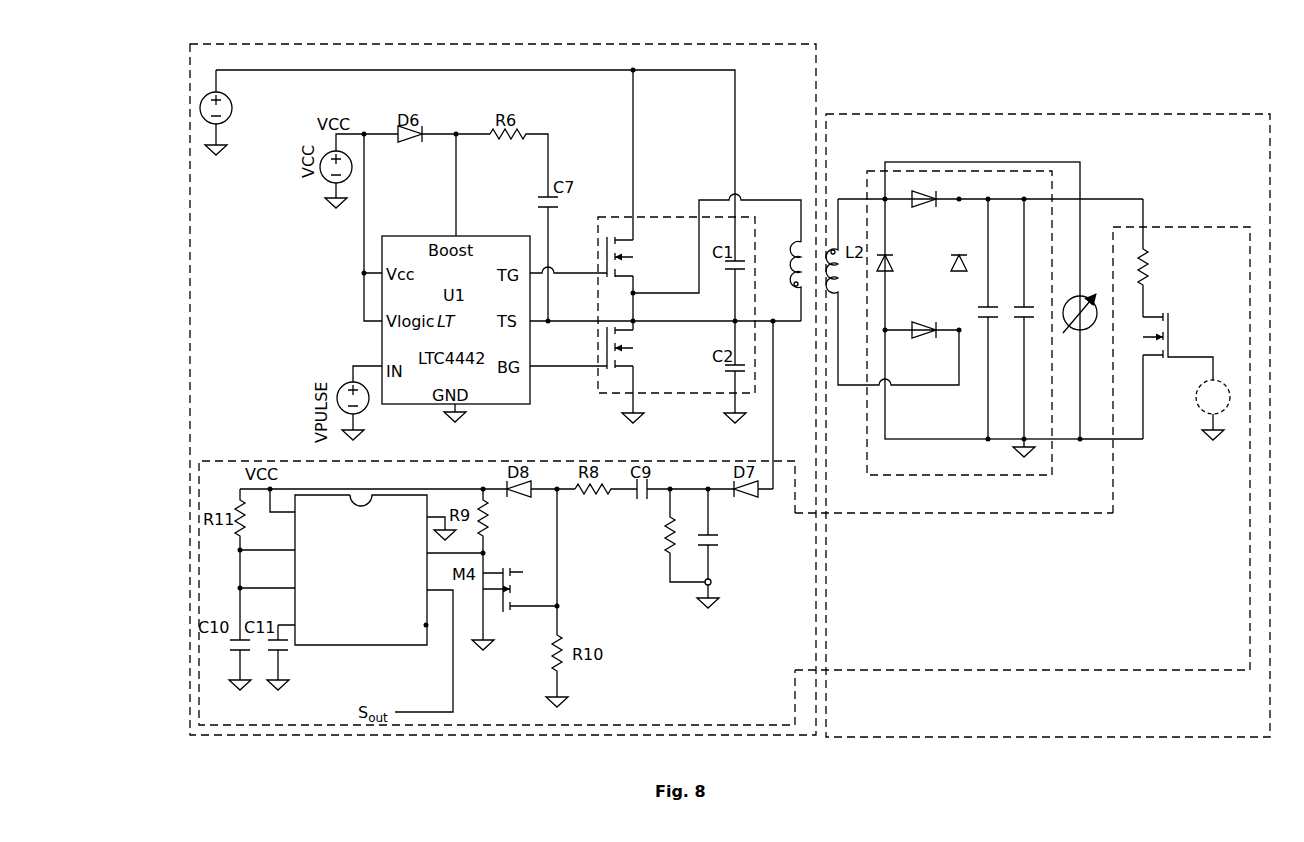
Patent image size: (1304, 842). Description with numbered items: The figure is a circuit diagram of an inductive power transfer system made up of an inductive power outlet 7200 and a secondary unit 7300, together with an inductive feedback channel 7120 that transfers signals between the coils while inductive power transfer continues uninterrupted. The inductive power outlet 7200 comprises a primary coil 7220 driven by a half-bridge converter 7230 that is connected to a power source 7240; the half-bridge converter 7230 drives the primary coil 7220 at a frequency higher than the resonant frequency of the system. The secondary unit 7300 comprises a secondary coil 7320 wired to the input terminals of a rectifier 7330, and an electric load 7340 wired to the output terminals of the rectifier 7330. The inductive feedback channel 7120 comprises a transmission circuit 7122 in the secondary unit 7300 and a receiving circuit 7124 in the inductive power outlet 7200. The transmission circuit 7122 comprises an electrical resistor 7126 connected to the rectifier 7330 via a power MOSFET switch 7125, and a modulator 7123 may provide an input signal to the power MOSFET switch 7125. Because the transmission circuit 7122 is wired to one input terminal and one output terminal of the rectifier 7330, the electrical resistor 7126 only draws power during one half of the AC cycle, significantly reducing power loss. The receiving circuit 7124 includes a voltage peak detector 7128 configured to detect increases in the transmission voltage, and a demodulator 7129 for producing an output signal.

The inductive power outlet 7200 is at (787, 72).
The power source 7240 is at (242, 130).
The half-bridge converter 7230 is at (668, 210).
The primary coil 7220 is at (794, 237).
The voltage peak detector 7128 is at (566, 573).
The demodulator 7129 is at (356, 652).
The receiving circuit 7124 is at (733, 591).
The secondary unit 7300 is at (1013, 125).
The secondary coil 7320 is at (843, 190).
The rectifier 7330 is at (1017, 186).
The electric load 7340 is at (1092, 258).
The electrical resistor 7126 is at (1168, 273).
The power MOSFET switch 7125 is at (1176, 326).
The modulator 7123 is at (1193, 420).
The transmission circuit 7122 is at (1195, 522).
The inductive feedback channel 7120 is at (1142, 648).